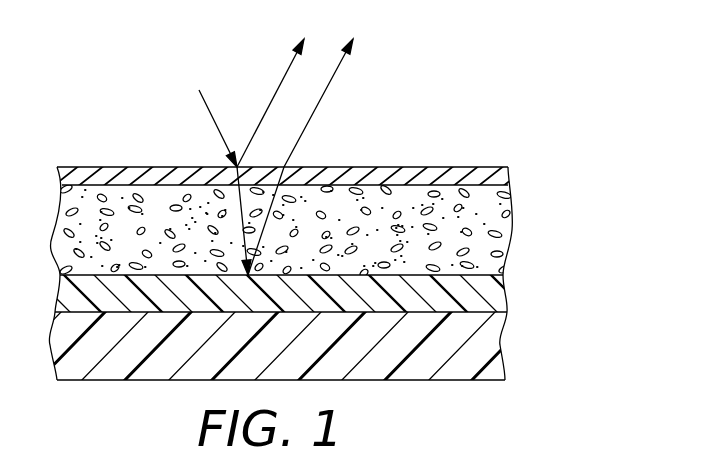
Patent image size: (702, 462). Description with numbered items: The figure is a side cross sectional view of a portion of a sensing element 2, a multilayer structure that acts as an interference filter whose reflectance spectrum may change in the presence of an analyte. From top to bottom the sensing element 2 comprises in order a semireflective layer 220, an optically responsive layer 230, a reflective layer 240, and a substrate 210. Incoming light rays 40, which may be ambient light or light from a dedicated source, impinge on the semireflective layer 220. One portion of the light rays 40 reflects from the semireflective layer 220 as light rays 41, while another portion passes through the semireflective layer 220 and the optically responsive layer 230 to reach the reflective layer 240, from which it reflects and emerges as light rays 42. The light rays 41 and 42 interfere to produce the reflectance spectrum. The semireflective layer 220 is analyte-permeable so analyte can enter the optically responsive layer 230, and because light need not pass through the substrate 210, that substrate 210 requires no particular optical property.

The sensing element 2 is at (505, 62).
The substrate 210 is at (493, 352).
The semireflective layer 220 is at (508, 176).
The optically responsive layer 230 is at (495, 233).
The reflective layer 240 is at (500, 293).
The incoming light rays 40 is at (213, 120).
The light rays reflected from semireflective layer 41 is at (279, 90).
The light rays reflected from reflective layer 42 is at (326, 92).